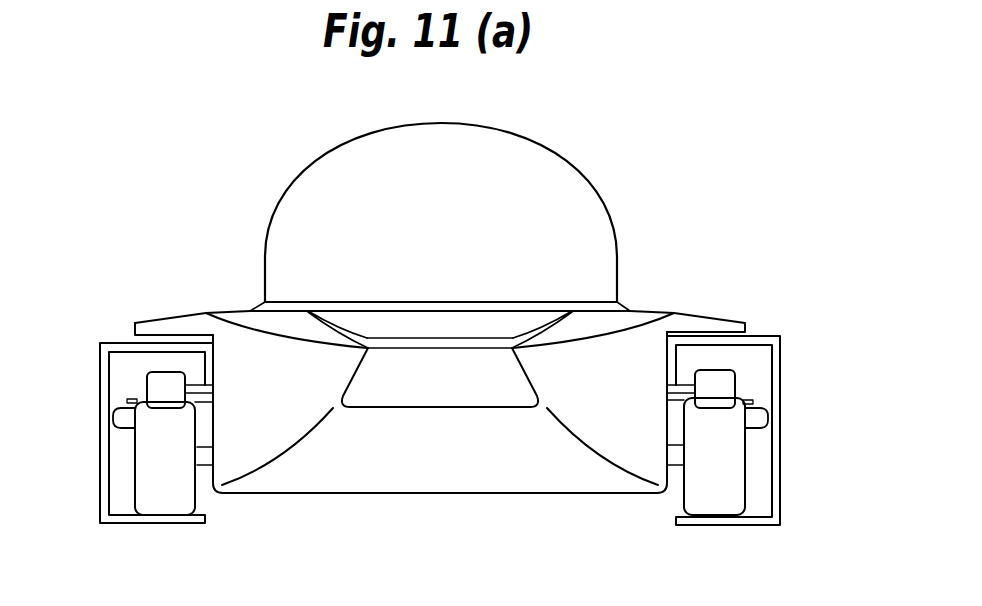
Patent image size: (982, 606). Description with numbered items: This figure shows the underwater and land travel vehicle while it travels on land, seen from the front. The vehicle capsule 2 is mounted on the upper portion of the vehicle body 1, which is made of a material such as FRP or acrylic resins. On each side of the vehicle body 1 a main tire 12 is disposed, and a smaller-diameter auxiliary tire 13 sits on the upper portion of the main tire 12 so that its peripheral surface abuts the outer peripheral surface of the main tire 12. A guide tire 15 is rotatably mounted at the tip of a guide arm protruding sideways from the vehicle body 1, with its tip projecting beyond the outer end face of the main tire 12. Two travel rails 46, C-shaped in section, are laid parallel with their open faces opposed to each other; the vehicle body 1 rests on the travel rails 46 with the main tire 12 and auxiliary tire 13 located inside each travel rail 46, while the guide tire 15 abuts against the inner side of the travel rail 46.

The vehicle body 1 is at (650, 311).
The vehicle capsule 2 is at (584, 183).
The main tire 12 is at (187, 498).
The auxiliary tire 13 is at (152, 378).
The guide tire 15 is at (114, 418).
The travel rail 46 is at (781, 350).